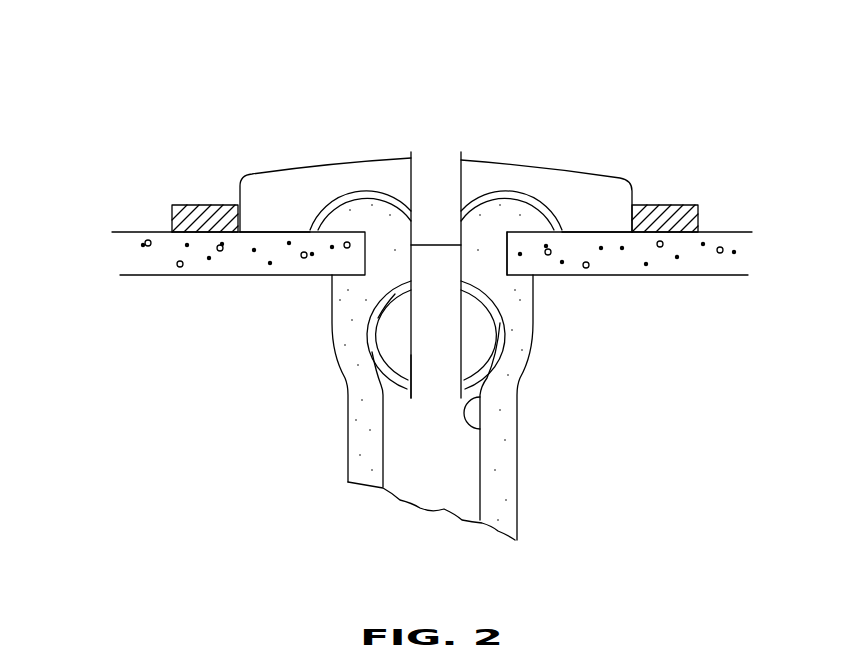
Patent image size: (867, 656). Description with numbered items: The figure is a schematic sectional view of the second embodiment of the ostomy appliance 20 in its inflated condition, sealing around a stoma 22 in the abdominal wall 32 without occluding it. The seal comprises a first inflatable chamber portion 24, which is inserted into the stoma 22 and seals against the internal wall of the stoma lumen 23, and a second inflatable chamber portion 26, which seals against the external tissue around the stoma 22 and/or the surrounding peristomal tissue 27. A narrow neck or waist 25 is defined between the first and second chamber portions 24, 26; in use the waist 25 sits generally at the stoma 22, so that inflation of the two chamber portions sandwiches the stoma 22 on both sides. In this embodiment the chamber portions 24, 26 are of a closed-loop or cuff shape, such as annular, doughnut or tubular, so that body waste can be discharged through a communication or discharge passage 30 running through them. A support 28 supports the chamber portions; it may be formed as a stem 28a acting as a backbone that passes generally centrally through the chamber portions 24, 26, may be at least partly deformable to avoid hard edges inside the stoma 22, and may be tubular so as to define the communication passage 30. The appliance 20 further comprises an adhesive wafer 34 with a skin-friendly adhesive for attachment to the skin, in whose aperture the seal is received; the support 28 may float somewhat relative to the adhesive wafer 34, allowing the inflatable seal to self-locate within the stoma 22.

The ostomy appliance 20 is at (562, 72).
The stoma 22 is at (485, 257).
The stoma lumen 23 is at (466, 418).
The first inflatable chamber portion 24 is at (480, 342).
The waist 25 is at (411, 245).
The second inflatable chamber portion 26 is at (275, 187).
The peristomal tissue 27 is at (608, 237).
The support 28 is at (470, 177).
The stem 28a is at (405, 360).
The communication passage 30 is at (417, 332).
The abdominal wall 32 is at (108, 253).
The adhesive wafer 34 is at (207, 205).